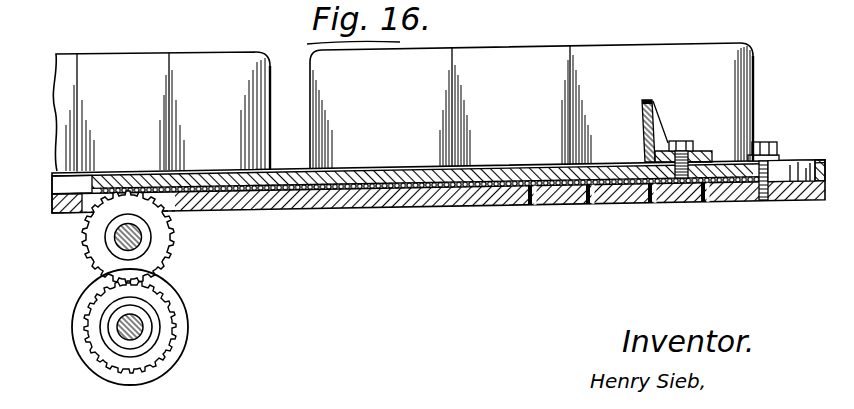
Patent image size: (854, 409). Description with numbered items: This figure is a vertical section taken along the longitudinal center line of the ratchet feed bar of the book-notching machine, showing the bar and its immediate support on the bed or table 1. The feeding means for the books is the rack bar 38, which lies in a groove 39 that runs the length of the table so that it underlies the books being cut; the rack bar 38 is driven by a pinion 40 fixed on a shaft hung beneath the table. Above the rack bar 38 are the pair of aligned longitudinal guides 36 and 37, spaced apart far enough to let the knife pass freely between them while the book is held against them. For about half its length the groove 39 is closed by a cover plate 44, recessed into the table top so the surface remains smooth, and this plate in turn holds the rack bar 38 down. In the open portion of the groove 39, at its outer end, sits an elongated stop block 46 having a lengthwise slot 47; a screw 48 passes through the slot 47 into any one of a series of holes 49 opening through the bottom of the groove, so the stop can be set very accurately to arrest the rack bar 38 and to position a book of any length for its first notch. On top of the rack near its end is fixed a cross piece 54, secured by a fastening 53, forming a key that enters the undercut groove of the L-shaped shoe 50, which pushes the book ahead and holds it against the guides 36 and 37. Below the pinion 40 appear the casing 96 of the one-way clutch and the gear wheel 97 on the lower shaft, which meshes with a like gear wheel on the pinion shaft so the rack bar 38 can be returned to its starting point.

The base plate 1 is at (432, 199).
The longitudinal guide 36 is at (506, 95).
The longitudinal guide 37 is at (192, 104).
The rack bar 38 is at (392, 176).
The groove 39 is at (68, 187).
The pinion 40 is at (160, 238).
The cover plate 44 is at (188, 172).
The stop block 46 is at (818, 160).
The slot 47 is at (793, 170).
The screw 48 is at (764, 141).
The holes 49 is at (707, 203).
The shoe 50 is at (642, 123).
The nut 53 is at (676, 140).
The cross piece 54 is at (703, 138).
The clutch casing 96 is at (183, 319).
The gear wheel 97 is at (157, 287).